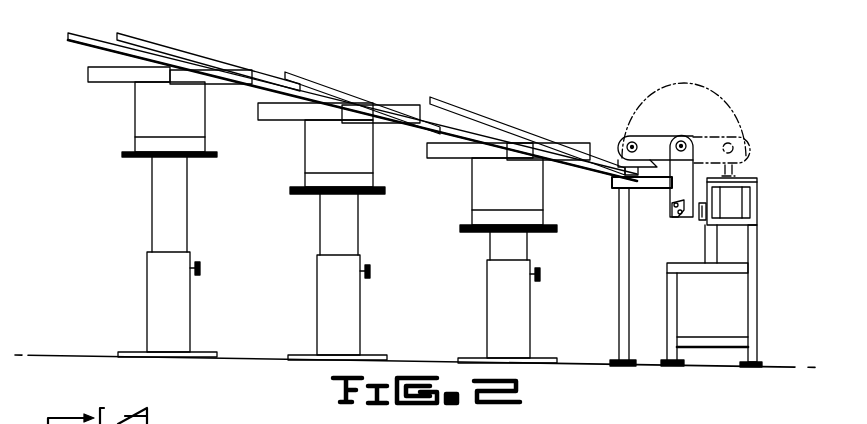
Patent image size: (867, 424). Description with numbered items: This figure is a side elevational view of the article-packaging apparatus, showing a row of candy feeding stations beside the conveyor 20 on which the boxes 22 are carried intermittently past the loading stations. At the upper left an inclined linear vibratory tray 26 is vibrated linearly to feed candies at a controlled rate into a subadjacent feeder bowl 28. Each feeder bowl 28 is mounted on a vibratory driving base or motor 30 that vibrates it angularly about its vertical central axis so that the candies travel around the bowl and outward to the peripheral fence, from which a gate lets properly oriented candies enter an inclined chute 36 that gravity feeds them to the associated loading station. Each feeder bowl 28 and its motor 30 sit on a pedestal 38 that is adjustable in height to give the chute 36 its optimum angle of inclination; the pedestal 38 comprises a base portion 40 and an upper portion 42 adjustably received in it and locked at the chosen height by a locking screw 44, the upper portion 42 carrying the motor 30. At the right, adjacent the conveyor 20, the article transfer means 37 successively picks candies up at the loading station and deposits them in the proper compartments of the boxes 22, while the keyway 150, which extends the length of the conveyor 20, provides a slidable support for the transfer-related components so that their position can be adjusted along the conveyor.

The conveyor 20 is at (762, 189).
The box 22 is at (752, 178).
The linear vibratory tray 26 is at (124, 44).
The feeder bowl 28 is at (127, 83).
The vibratory driving base or motor 30 is at (142, 123).
The chute 36 is at (230, 78).
The article transfer means 37 is at (643, 128).
The pedestal 38 is at (142, 235).
The base portion 40 is at (182, 323).
The upper portion 42 is at (158, 192).
The locking screw 44 is at (200, 272).
The keyway 150 is at (687, 213).